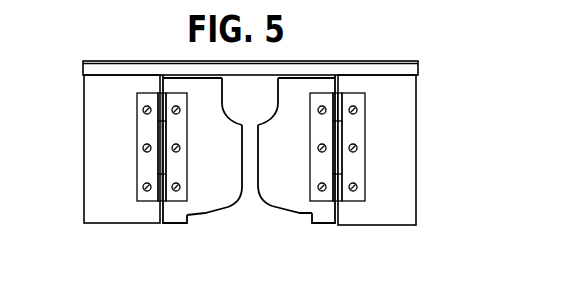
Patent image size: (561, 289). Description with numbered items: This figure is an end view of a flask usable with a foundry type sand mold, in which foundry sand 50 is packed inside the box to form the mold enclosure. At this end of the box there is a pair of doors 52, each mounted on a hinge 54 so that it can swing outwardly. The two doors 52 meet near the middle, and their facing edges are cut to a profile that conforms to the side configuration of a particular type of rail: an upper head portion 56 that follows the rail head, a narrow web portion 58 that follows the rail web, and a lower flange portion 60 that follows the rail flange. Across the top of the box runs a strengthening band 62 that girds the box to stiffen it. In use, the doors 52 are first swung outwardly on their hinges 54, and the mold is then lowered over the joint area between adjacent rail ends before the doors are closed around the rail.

The foundry sand 50 is at (100, 240).
The door 52 is at (177, 212).
The hinge 54 is at (136, 171).
The head portion 56 is at (279, 90).
The web portion 58 is at (258, 143).
The flange portion 60 is at (209, 215).
The strengthening band 62 is at (419, 71).